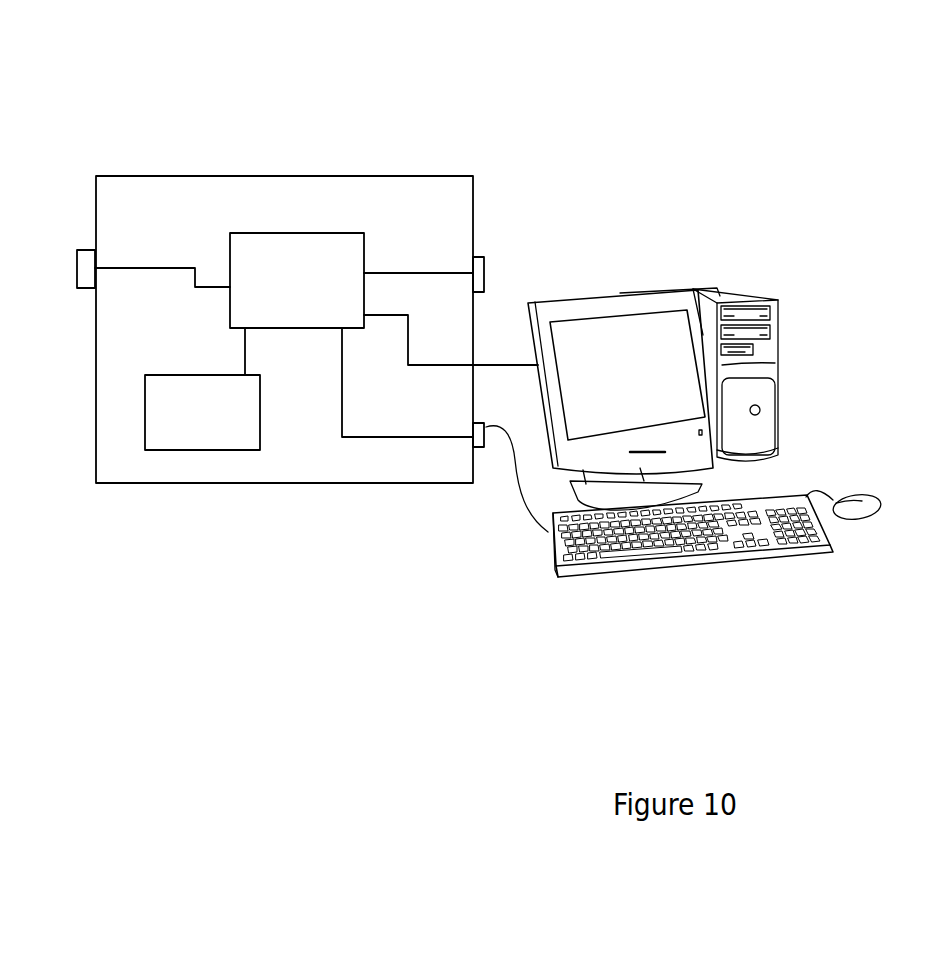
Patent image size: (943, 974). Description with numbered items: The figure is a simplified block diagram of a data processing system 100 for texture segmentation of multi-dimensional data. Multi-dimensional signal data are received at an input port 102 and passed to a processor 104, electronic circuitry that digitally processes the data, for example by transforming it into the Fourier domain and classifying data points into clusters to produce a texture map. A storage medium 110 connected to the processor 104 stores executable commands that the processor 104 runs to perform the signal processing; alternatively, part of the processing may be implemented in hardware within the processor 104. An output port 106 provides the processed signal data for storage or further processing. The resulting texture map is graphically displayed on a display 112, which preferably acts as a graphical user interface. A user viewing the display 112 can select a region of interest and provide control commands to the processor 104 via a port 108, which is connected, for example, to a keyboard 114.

The data processing system 100 is at (628, 17).
The input port 102 is at (70, 260).
The processor 104 is at (307, 247).
The output port 106 is at (485, 276).
The port 108 is at (484, 447).
The storage medium 110 is at (184, 431).
The display 112 is at (603, 327).
The keyboard 114 is at (715, 565).